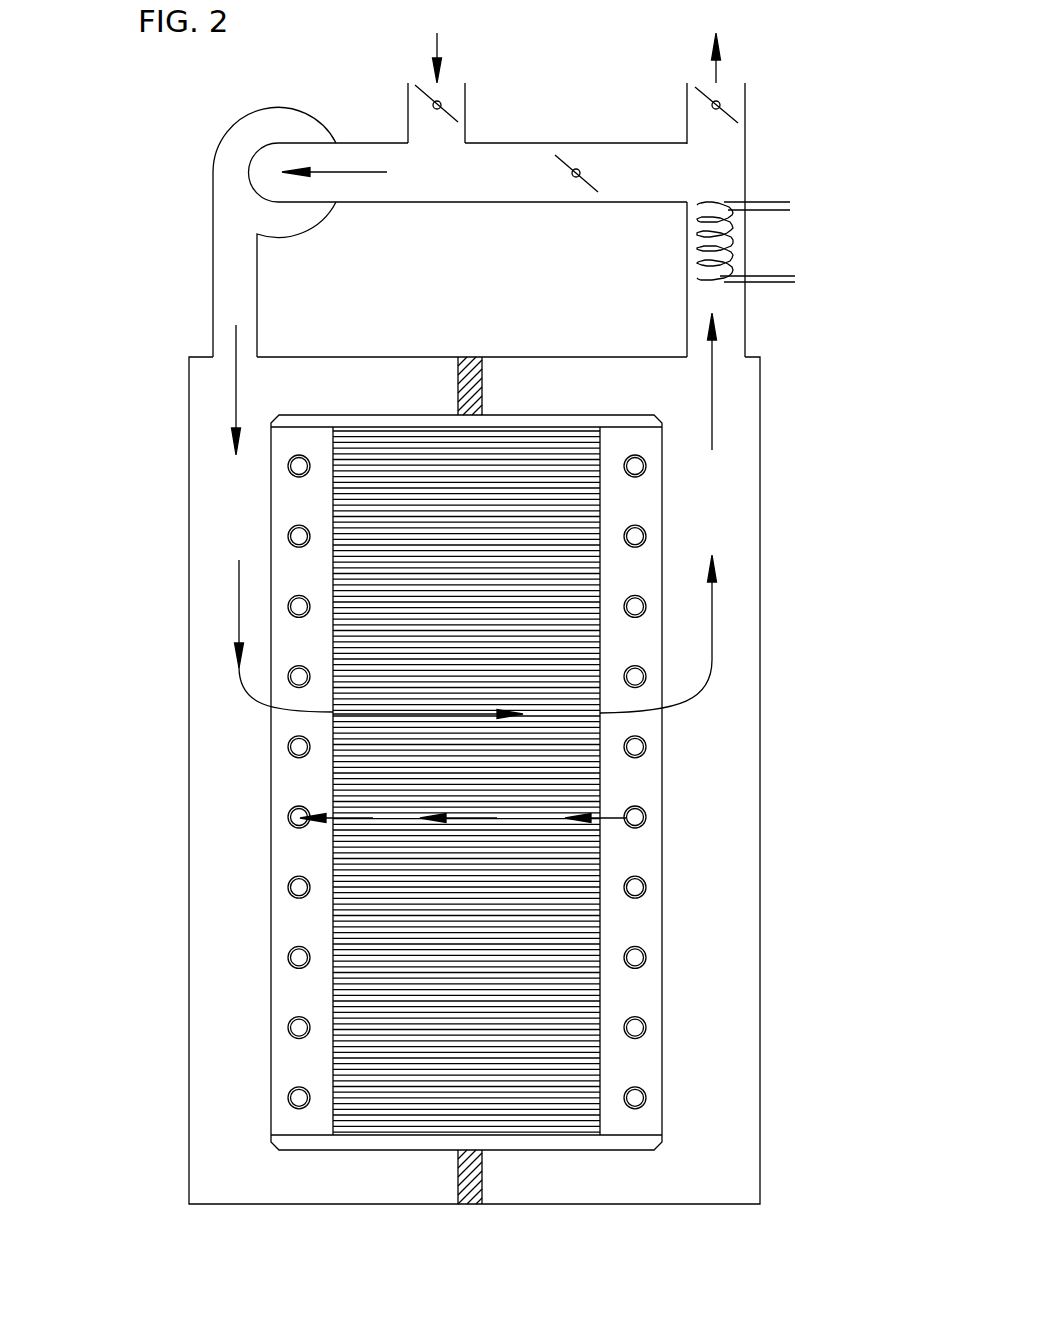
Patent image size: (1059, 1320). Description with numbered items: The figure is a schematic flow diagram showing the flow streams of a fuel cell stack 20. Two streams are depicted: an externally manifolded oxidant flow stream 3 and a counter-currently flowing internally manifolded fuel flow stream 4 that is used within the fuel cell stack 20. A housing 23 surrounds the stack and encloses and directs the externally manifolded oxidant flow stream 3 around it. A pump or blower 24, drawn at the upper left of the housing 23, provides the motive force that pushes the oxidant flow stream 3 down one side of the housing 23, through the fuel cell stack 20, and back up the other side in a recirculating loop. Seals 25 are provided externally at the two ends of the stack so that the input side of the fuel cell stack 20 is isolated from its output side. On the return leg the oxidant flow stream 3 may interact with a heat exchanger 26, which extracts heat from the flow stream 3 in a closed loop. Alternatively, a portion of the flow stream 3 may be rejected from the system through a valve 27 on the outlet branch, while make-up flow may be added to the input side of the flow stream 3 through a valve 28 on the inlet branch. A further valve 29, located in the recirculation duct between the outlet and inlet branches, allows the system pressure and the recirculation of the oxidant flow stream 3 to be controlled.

The externally manifolded oxidant flow stream 3 is at (238, 595).
The internally manifolded fuel flow stream 4 is at (312, 822).
The fuel cell stack 20 is at (667, 783).
The housing 23 is at (187, 717).
The pump or blower 24 is at (213, 153).
The seals 25 is at (475, 357).
The heat exchanger 26 is at (738, 248).
The valve 27 is at (727, 105).
The valve 28 is at (447, 108).
The valve 29 is at (578, 170).